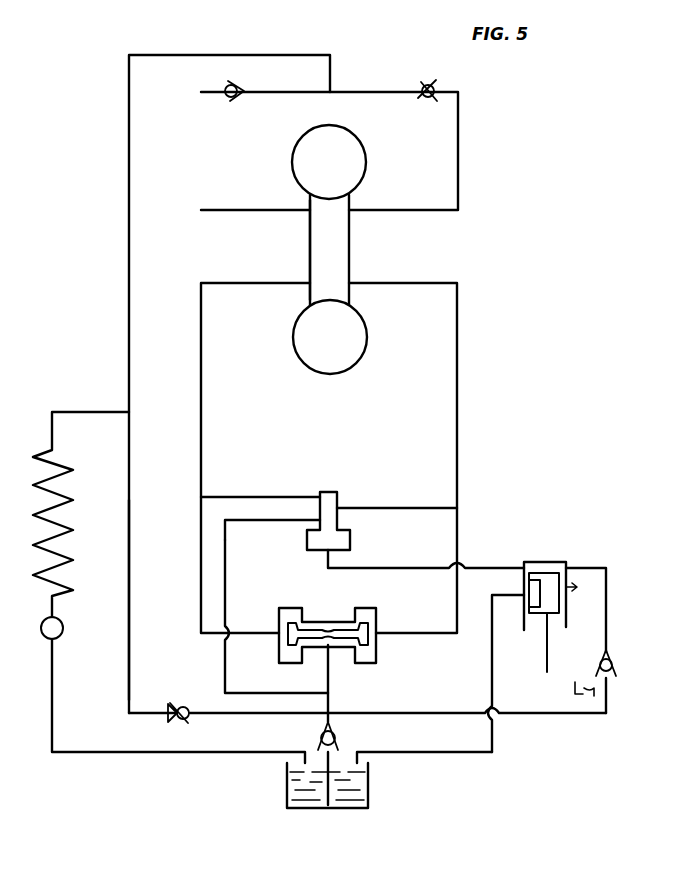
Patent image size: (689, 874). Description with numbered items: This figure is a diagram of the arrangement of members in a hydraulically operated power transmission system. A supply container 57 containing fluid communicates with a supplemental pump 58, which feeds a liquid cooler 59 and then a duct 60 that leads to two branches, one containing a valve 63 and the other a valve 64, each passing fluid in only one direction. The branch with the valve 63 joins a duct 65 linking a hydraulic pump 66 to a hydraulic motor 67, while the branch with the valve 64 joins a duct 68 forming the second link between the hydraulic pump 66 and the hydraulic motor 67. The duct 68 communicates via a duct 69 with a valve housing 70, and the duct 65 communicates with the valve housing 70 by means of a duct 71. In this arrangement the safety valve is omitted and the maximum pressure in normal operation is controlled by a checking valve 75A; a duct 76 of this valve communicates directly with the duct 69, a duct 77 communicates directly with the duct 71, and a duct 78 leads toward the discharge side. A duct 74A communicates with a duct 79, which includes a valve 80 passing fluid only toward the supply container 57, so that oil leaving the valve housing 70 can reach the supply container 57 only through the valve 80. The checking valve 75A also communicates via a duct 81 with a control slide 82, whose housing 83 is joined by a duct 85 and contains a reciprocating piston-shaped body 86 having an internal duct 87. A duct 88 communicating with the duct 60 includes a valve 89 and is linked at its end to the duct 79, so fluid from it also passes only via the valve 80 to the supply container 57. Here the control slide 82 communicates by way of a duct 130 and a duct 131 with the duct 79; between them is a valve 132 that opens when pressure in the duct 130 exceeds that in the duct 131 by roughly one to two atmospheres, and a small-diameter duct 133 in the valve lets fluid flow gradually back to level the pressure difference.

The supply container 57 is at (370, 790).
The supplemental pump 58 is at (66, 638).
The liquid cooler 59 is at (66, 556).
The duct 60 is at (129, 330).
The valve 63 is at (422, 97).
The valve 64 is at (233, 97).
The duct 65 is at (349, 262).
The hydraulic pump 66 is at (360, 176).
The hydraulic motor 67 is at (360, 366).
The duct 68 is at (310, 258).
The duct 69 is at (205, 432).
The valve housing 70 is at (342, 620).
The duct 71 is at (457, 400).
The duct 74A is at (232, 606).
The checking valve 75A is at (330, 492).
The duct 76 is at (245, 497).
The duct 77 is at (403, 506).
The duct 78 is at (290, 526).
The duct 79 is at (328, 678).
The valve 80 is at (336, 734).
The duct 81 is at (370, 568).
The control slide 82 is at (598, 603).
The housing 83 is at (528, 562).
The duct 85 is at (496, 680).
The piston-shaped body 86 is at (549, 615).
The duct 87 is at (546, 590).
The duct 88 is at (131, 620).
The valve 89 is at (176, 706).
The duct 130 is at (606, 630).
The duct 131 is at (468, 712).
The valve 132 is at (612, 658).
The duct 133 is at (608, 672).